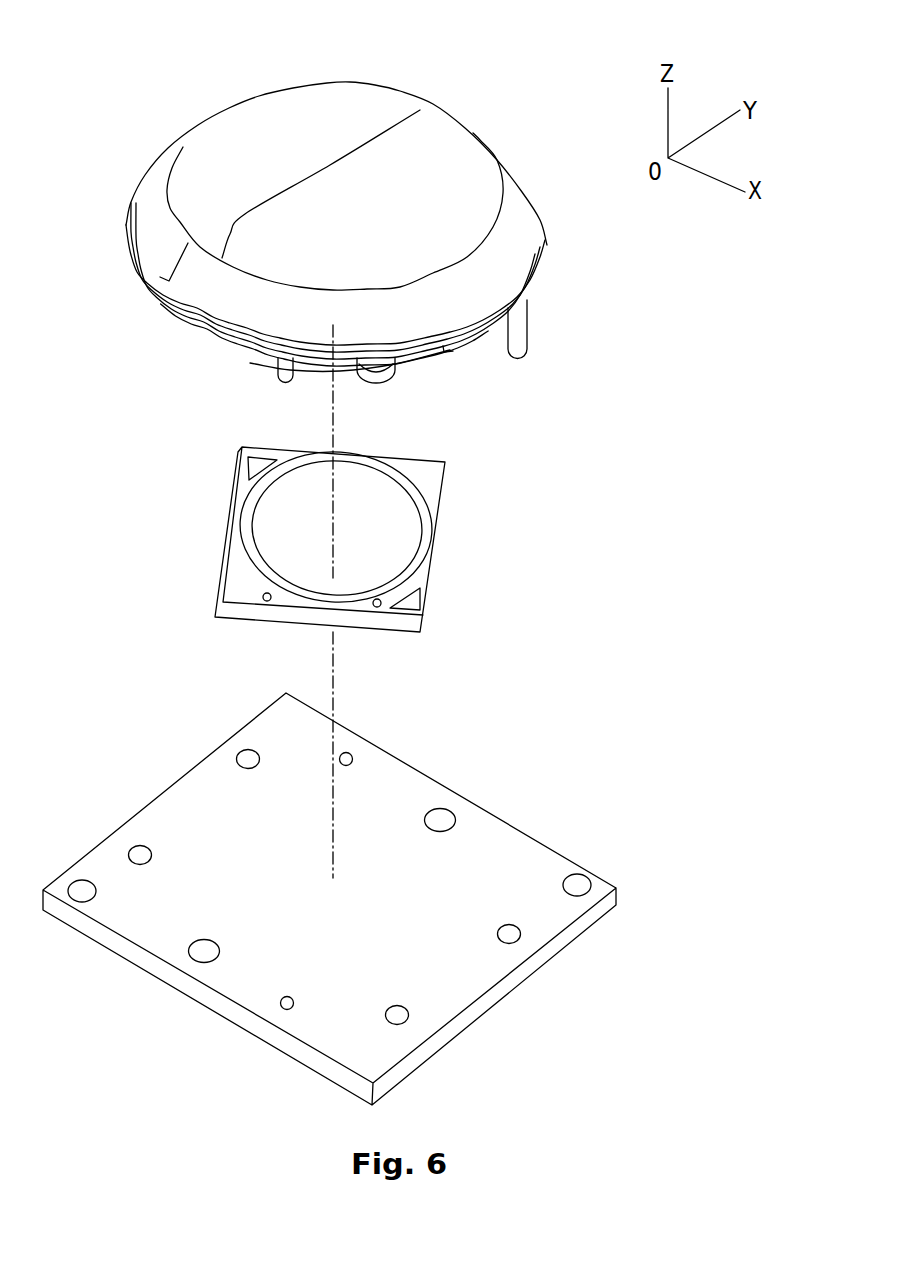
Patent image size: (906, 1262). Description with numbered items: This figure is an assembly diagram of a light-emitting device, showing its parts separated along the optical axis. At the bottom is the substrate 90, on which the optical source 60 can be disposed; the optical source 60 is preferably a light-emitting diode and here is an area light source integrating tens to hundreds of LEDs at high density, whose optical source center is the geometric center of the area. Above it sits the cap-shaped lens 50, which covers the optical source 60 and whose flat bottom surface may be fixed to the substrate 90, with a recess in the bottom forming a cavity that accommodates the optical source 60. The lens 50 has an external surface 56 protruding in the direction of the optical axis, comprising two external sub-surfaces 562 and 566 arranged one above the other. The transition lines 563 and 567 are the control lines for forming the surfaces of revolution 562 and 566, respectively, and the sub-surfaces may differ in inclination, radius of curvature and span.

The lens 50 is at (530, 63).
The external surface 56 is at (252, 98).
The external sub-surface 562 is at (237, 322).
The transition line 563 is at (145, 291).
The external sub-surface 566 is at (487, 197).
The transition line 567 is at (383, 130).
The optical source 60 is at (433, 478).
The substrate 90 is at (523, 971).